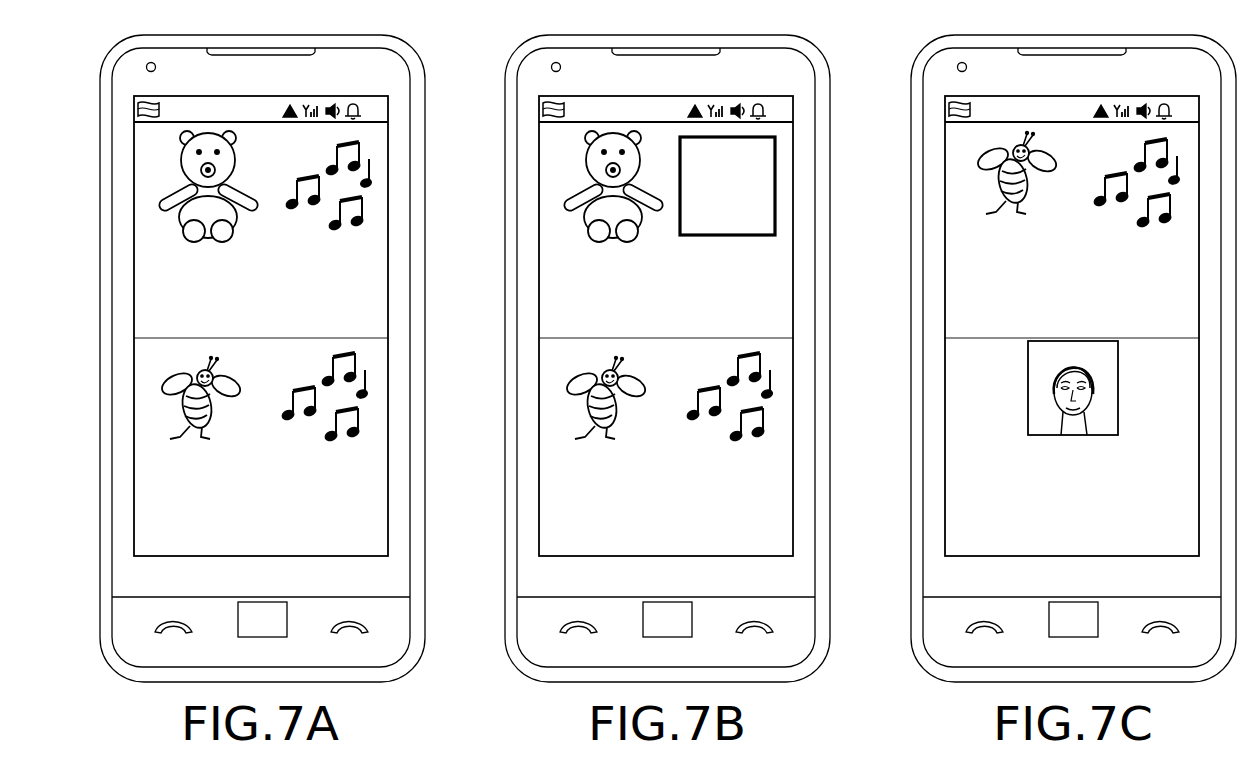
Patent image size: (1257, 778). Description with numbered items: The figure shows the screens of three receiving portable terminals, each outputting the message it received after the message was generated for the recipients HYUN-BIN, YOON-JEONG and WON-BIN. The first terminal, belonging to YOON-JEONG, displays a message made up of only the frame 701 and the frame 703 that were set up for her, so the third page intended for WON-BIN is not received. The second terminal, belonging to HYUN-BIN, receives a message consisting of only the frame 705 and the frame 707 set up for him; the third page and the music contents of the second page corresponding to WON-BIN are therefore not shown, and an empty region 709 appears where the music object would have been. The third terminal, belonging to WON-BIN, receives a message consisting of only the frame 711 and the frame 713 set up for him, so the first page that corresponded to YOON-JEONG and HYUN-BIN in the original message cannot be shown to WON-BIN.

In FIG. 7A, the frame 701 is at (382, 200).
In FIG. 7A, the frame 703 is at (382, 433).
In FIG. 7B, the frame 705 is at (620, 233).
In FIG. 7B, the frame 707 is at (620, 451).
In FIG. 7B, the empty object region (music object removed) 709 is at (786, 186).
In FIG. 7C, the frame 711 is at (1028, 233).
In FIG. 7C, the frame 713 is at (1028, 447).